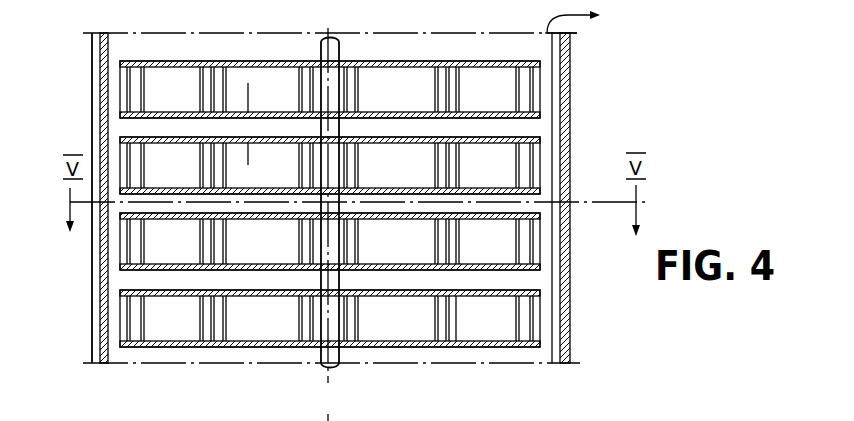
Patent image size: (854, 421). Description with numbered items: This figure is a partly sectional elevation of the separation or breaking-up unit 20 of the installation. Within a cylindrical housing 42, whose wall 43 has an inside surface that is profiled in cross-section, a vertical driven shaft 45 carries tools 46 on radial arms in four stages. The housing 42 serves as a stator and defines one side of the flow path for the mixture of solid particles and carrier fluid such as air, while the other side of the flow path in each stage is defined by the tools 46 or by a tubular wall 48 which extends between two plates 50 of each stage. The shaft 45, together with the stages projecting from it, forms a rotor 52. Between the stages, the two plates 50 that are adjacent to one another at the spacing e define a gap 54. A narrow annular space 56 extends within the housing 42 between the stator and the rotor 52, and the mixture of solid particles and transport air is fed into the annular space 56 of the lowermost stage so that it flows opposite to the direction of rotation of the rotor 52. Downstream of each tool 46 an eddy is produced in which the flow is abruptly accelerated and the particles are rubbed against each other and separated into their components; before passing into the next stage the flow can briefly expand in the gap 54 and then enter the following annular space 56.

The separation or breaking-up unit 20 is at (612, 136).
The cylindrical housing 42 is at (94, 267).
The wall of the housing 43 is at (95, 77).
The vertical driven shaft 45 is at (322, 362).
The tools 46 is at (522, 318).
The tubular wall 48 is at (507, 97).
The plates 50 is at (186, 347).
The rotor 52 is at (112, 245).
The gap 54 is at (128, 126).
The narrow annular space 56 is at (550, 236).
The spacing e is at (248, 124).